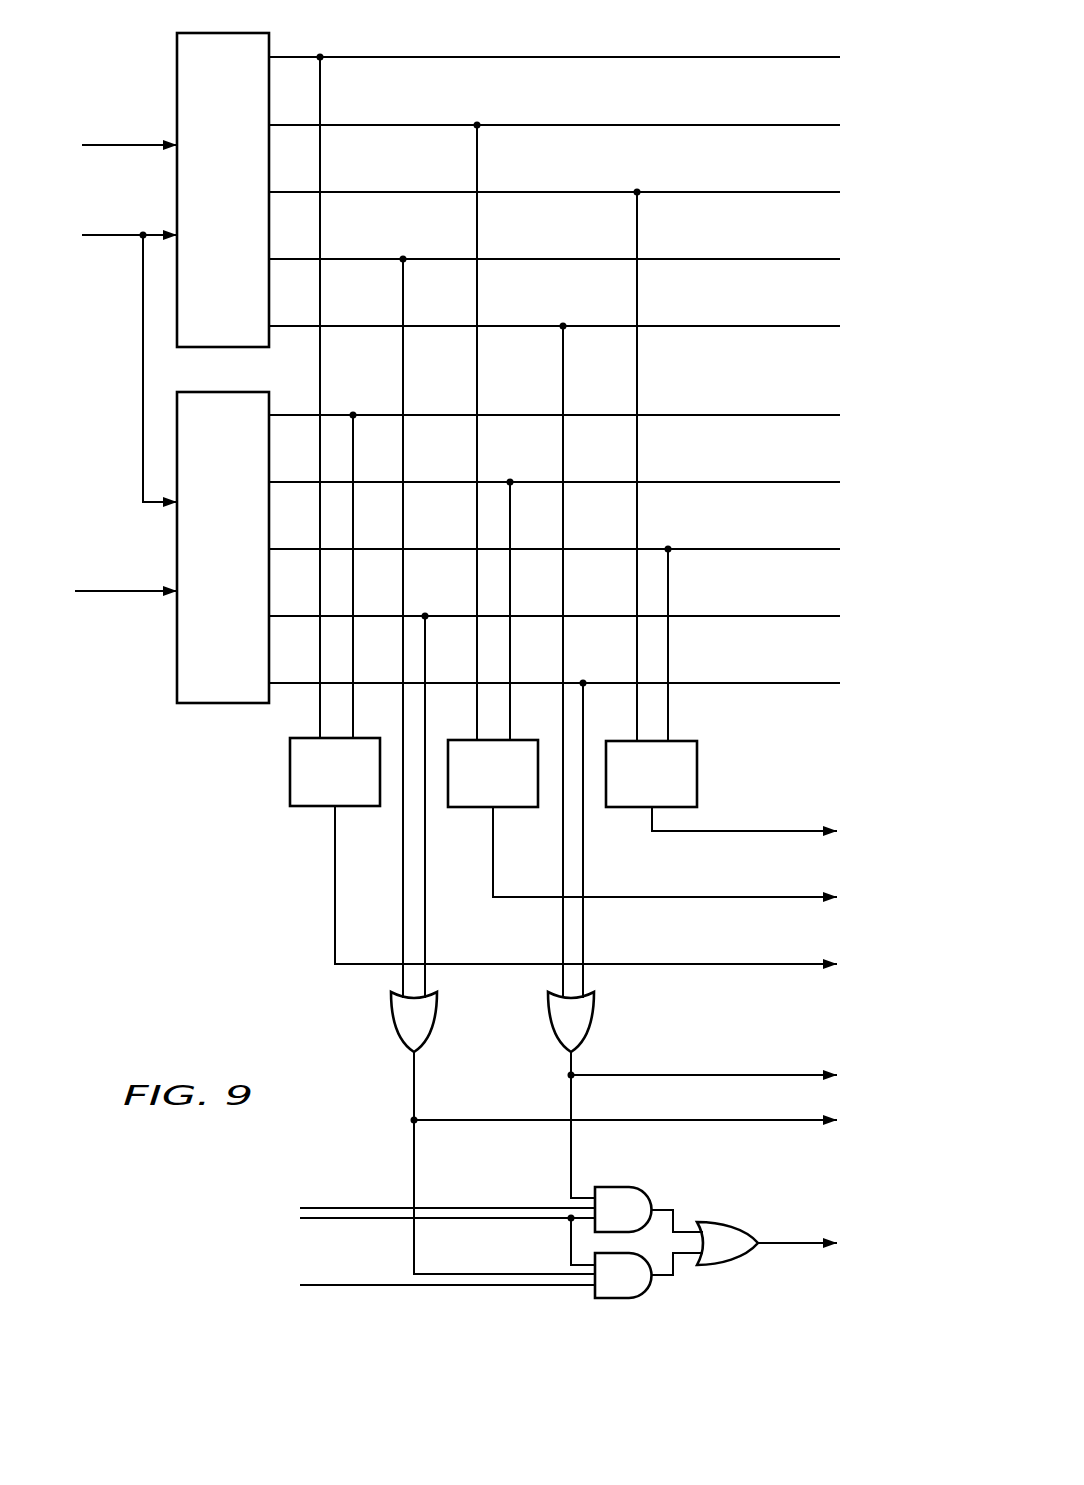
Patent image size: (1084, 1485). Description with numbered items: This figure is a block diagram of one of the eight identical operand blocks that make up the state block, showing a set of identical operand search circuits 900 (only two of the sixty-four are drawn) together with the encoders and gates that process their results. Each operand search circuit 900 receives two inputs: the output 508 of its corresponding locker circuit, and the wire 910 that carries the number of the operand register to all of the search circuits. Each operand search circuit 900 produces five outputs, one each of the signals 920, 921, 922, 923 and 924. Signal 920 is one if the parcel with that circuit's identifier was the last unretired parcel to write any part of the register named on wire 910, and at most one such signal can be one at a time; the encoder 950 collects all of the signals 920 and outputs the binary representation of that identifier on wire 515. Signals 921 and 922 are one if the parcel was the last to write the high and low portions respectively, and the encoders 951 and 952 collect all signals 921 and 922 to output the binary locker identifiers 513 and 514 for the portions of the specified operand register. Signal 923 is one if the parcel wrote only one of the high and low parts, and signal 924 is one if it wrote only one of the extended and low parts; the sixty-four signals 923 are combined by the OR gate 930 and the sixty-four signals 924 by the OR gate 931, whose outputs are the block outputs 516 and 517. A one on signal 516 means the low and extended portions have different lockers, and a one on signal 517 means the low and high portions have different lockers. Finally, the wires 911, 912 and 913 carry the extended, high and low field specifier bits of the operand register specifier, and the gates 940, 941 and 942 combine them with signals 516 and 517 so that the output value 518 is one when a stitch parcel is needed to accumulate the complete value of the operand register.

The operand search circuit 900 is at (244, 204).
The locker circuit output 508 is at (117, 144).
The wire carrying register number 910 is at (113, 237).
The operand search circuit output signal 920 is at (787, 57).
The operand search circuit output signal 921 is at (787, 125).
The operand search circuit output signal 922 is at (787, 192).
The operand search circuit output signal 923 is at (787, 259).
The operand search circuit output signal 924 is at (787, 326).
The encoder 950 is at (355, 783).
The encoder 951 is at (512, 783).
The encoder 952 is at (670, 783).
The binary representation output 513 is at (741, 832).
The binary representation output 514 is at (741, 898).
The encoder output wire 515 is at (741, 965).
The operand block output signal 516 is at (796, 1075).
The operand block output signal 517 is at (797, 1121).
The stitch-needed output value 518 is at (797, 1244).
The 64-input OR gate 930 is at (391, 1024).
The 64-input OR gate 931 is at (593, 1025).
The extended field specifier bit wire 911 is at (333, 1206).
The high field specifier bit wire 912 is at (334, 1220).
The low field specifier bit wire 913 is at (334, 1287).
The logic gate 940 is at (614, 1186).
The logic gate 941 is at (617, 1299).
The logic gate 942 is at (731, 1222).